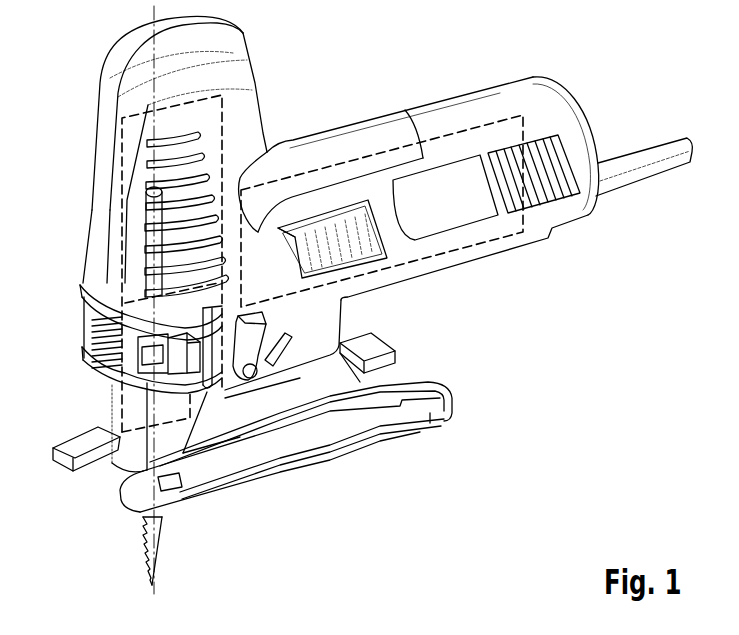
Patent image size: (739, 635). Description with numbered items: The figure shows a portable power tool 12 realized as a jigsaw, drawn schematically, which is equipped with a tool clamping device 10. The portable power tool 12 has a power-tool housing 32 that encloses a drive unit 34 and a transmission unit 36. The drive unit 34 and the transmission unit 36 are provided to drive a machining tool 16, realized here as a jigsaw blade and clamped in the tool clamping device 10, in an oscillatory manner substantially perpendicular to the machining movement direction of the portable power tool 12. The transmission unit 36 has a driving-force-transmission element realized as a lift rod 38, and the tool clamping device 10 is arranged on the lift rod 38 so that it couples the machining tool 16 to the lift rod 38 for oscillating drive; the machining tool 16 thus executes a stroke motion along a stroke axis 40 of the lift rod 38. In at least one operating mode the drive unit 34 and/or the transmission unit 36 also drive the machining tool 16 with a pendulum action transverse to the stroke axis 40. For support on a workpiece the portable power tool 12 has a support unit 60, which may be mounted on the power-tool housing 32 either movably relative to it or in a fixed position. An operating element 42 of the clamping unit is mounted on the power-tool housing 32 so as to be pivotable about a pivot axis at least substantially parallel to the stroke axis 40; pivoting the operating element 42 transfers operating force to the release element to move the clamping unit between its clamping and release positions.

The tool clamping device 10 is at (113, 386).
The portable power tool 12 is at (613, 80).
The machining tool 16 is at (158, 542).
The power-tool housing 32 is at (428, 123).
The drive unit 34 is at (477, 127).
The transmission unit 36 is at (100, 287).
The lift rod 38 is at (140, 195).
The stroke axis 40 is at (153, 18).
The operating element 42 is at (180, 366).
The support unit 60 is at (474, 383).